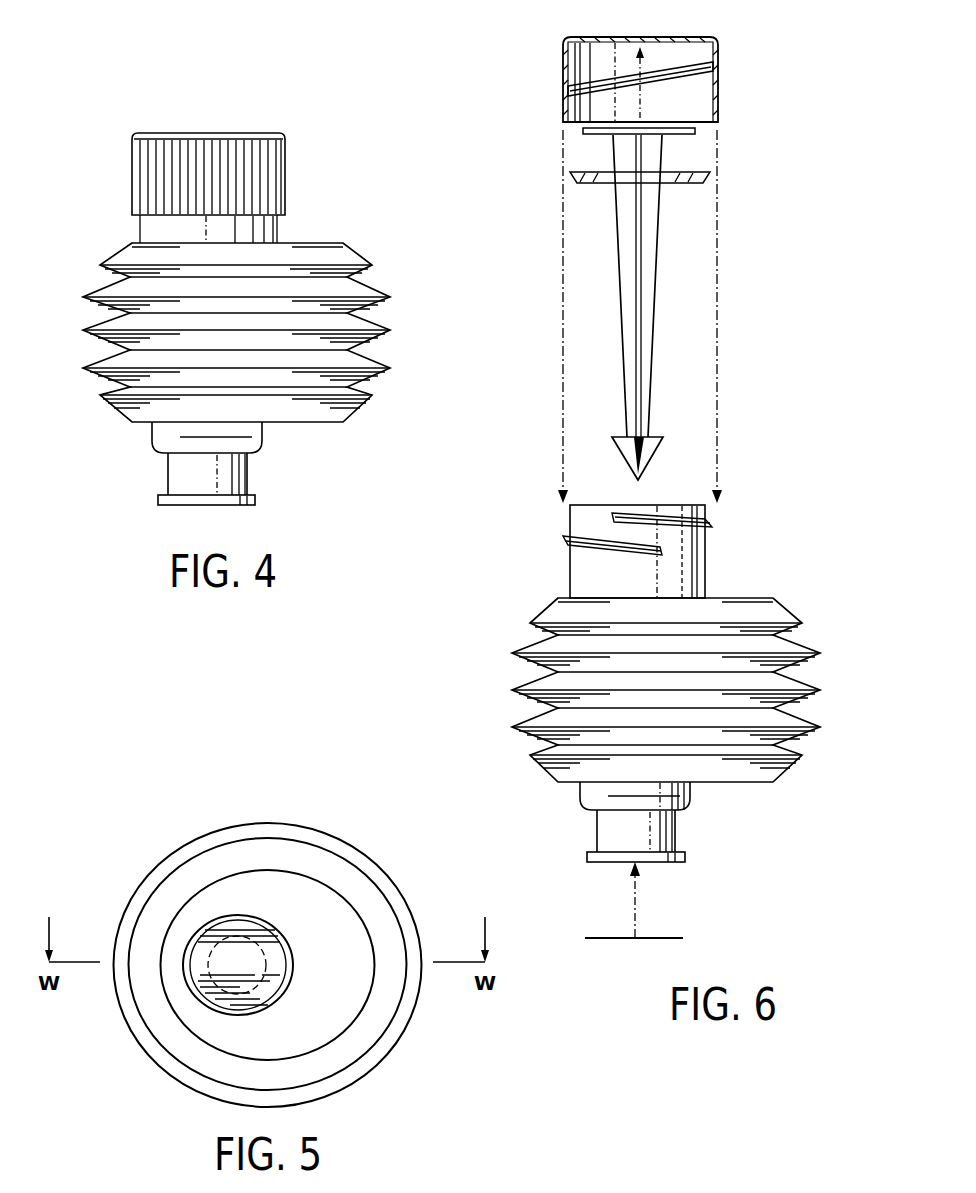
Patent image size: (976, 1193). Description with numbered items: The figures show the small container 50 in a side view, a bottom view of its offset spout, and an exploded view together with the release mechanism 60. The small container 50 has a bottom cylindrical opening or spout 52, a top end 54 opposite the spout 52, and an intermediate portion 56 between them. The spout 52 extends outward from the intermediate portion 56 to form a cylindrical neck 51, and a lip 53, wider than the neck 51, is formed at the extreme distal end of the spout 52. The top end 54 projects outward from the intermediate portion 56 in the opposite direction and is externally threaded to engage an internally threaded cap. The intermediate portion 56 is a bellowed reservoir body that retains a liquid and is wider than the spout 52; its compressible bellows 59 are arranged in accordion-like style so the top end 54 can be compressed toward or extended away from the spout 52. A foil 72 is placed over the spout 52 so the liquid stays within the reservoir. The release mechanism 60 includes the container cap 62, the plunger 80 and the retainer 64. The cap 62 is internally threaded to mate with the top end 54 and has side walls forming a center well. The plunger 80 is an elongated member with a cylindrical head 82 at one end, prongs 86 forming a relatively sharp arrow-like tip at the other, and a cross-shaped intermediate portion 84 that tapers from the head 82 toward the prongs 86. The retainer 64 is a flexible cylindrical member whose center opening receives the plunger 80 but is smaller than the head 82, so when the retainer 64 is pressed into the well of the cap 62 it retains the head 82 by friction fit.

In FIG. 4, the small container 50 is at (258, 70).
In FIG. 6, the small container 50 is at (508, 595).
In FIG. 4, the cylindrical neck 51 is at (168, 470).
In FIG. 6, the cylindrical neck 51 is at (635, 796).
In FIG. 4, the spout 52 is at (263, 460).
In FIG. 5, the spout 52 is at (283, 938).
In FIG. 6, the spout 52 is at (636, 831).
In FIG. 4, the lip 53 is at (158, 501).
In FIG. 6, the lip 53 is at (636, 857).
In FIG. 4, the top end 54 is at (292, 177).
In FIG. 6, the top end 54 is at (705, 555).
In FIG. 4, the intermediate portion 56 is at (72, 428).
In FIG. 6, the intermediate portion 56 is at (666, 690).
In FIG. 4, the compressible bellows 59 is at (372, 266).
In FIG. 6, the release mechanism 60 is at (690, 20).
In FIG. 4, the container cap 62 is at (155, 135).
In FIG. 6, the container cap 62 is at (718, 60).
In FIG. 6, the retainer 64 is at (708, 182).
In FIG. 4, the foil 72 is at (247, 506).
In FIG. 5, the foil 72 is at (268, 982).
In FIG. 6, the foil 72 is at (683, 937).
In FIG. 6, the plunger 80 is at (683, 242).
In FIG. 6, the head 82 is at (690, 138).
In FIG. 6, the intermediate portion of plunger 84 is at (650, 292).
In FIG. 6, the prongs 86 is at (662, 446).